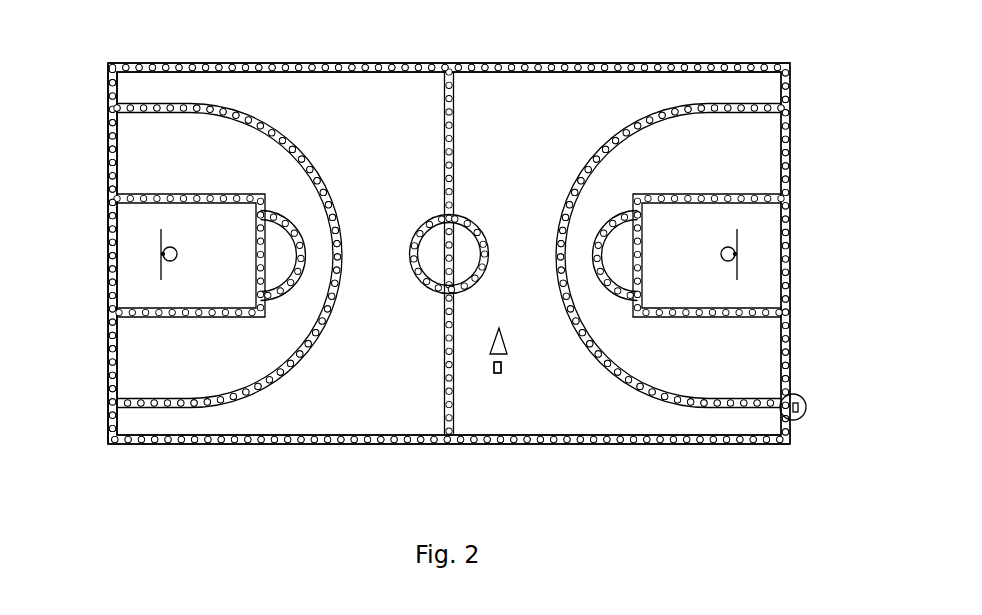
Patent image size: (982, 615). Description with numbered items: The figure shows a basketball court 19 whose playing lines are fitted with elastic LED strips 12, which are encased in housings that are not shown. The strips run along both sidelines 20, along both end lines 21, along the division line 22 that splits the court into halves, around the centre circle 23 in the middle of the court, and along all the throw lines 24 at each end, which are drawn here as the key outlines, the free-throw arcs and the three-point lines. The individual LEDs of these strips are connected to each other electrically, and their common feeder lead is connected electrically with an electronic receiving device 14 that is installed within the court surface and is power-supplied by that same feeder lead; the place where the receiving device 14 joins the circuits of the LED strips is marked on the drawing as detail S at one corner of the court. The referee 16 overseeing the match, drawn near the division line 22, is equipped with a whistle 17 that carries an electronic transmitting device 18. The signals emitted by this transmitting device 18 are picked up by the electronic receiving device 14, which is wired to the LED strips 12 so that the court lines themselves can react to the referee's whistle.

The elastic LED strips 12 is at (289, 219).
The electronic receiving device 14 is at (797, 420).
The referee 16 is at (490, 353).
The whistle 17 is at (496, 374).
The electronic transmitting device 18 is at (498, 374).
The basketball court 19 is at (425, 220).
The sidelines 20 is at (292, 58).
The end lines 21 is at (107, 216).
The division line 22 is at (436, 392).
The centre circle 23 is at (417, 277).
The throw lines 24 is at (281, 303).
The detail of connection of the electronic receiving device with circuits of LED str S is at (838, 380).